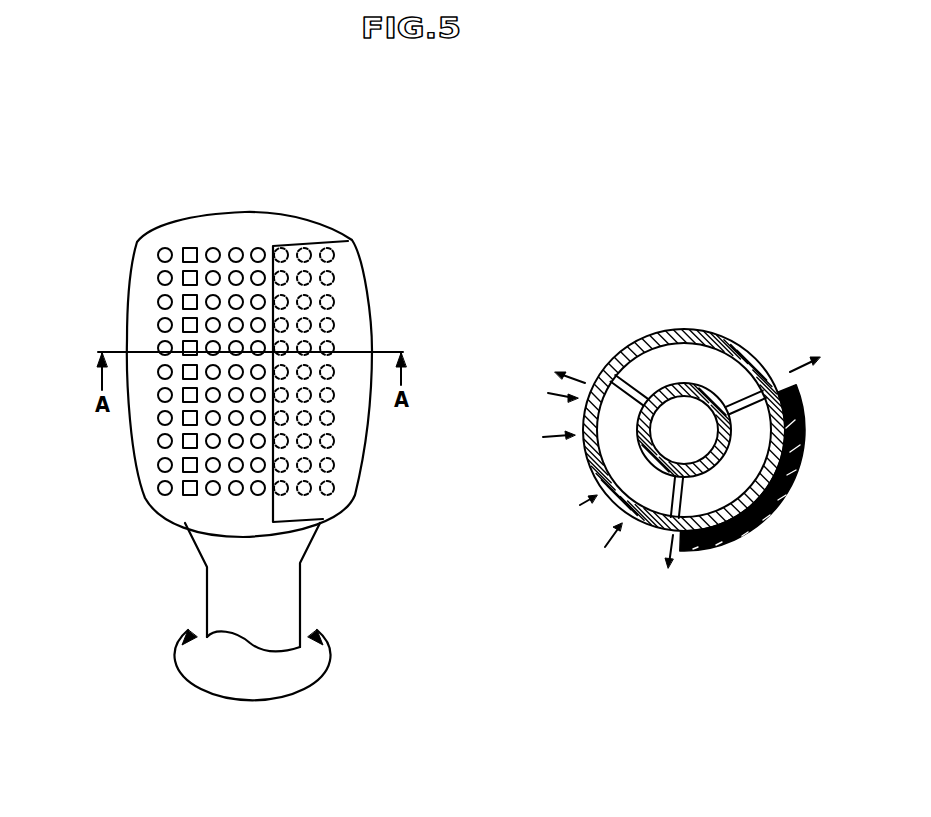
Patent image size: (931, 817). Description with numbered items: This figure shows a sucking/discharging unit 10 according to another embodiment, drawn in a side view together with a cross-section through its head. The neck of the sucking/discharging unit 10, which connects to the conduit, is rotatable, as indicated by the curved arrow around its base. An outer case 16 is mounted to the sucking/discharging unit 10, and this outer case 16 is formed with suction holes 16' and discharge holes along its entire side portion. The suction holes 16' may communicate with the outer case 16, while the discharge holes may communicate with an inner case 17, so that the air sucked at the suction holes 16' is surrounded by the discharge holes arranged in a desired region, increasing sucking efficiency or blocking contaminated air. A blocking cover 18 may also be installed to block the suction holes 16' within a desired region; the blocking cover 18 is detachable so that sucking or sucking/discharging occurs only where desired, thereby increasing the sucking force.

The sucking/discharging unit 10 is at (318, 213).
The outer case 16 is at (433, 383).
The suction holes 16' is at (342, 397).
The inner case 17 is at (688, 383).
The blocking cover 18 is at (362, 265).